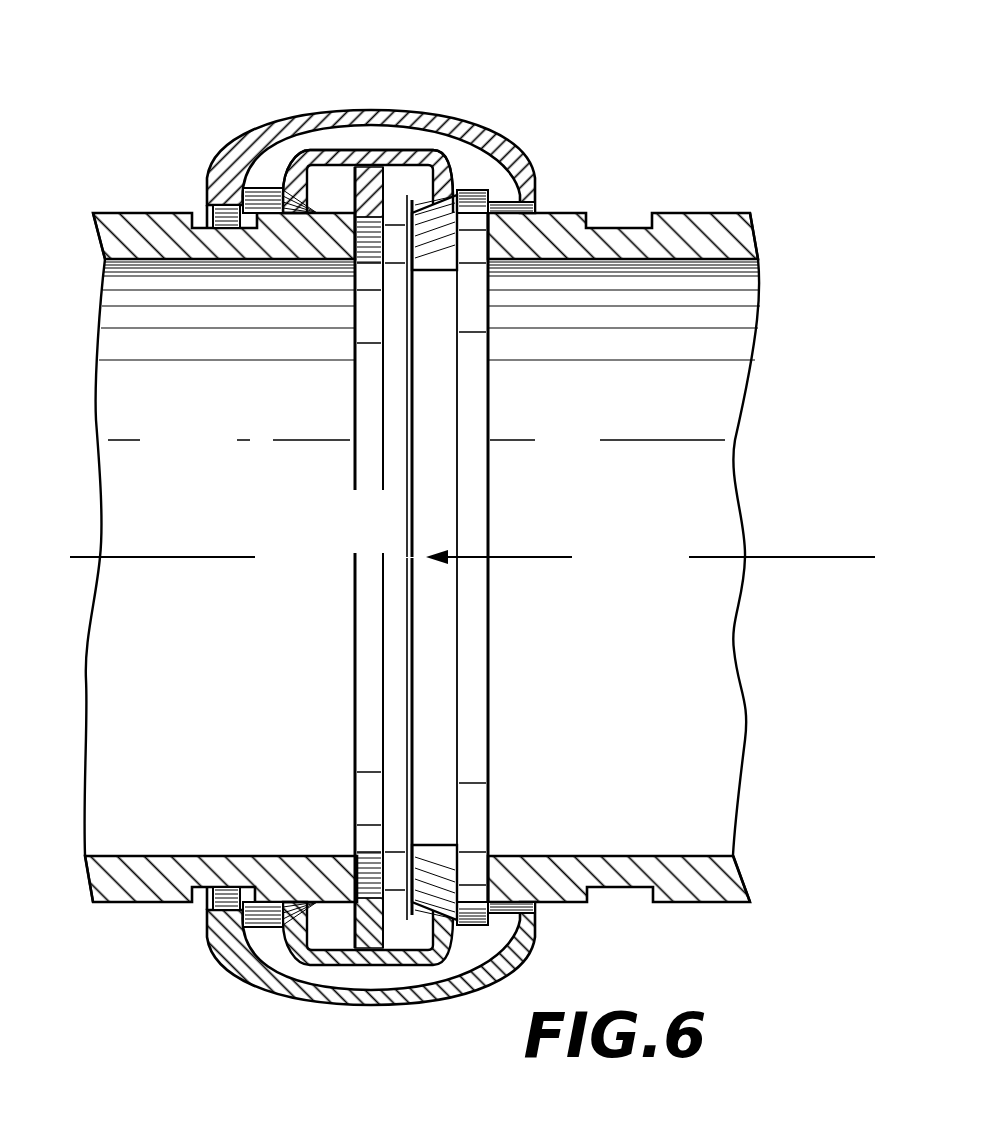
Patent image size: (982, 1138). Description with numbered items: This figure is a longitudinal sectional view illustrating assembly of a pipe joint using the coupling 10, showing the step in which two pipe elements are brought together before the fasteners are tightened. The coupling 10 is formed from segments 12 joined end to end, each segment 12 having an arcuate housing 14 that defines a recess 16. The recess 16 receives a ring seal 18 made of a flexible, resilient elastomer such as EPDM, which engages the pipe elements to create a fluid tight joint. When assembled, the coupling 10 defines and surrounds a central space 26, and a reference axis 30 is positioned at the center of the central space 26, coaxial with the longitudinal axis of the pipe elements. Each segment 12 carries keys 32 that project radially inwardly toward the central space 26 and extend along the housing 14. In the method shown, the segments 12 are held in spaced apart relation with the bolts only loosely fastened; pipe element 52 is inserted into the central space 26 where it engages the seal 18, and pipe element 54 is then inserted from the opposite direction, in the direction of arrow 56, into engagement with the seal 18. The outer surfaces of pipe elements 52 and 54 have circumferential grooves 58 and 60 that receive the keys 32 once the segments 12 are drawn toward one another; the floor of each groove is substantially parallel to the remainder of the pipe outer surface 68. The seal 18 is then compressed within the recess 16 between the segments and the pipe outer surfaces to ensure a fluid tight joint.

The coupling 10 is at (315, 570).
The segment 12 is at (300, 985).
The arcuate housing 14 is at (375, 1008).
The recess 16 is at (388, 115).
The ring seal 18 is at (370, 150).
The central space 26 is at (345, 543).
The reference axis 30 is at (810, 557).
The key 32 is at (240, 940).
The pipe element 52 is at (102, 820).
The pipe element 54 is at (725, 762).
The arrow 56 is at (516, 557).
The circumferential groove 58 is at (218, 885).
The circumferential groove 60 is at (618, 217).
The pipe outer surface 68 is at (125, 222).